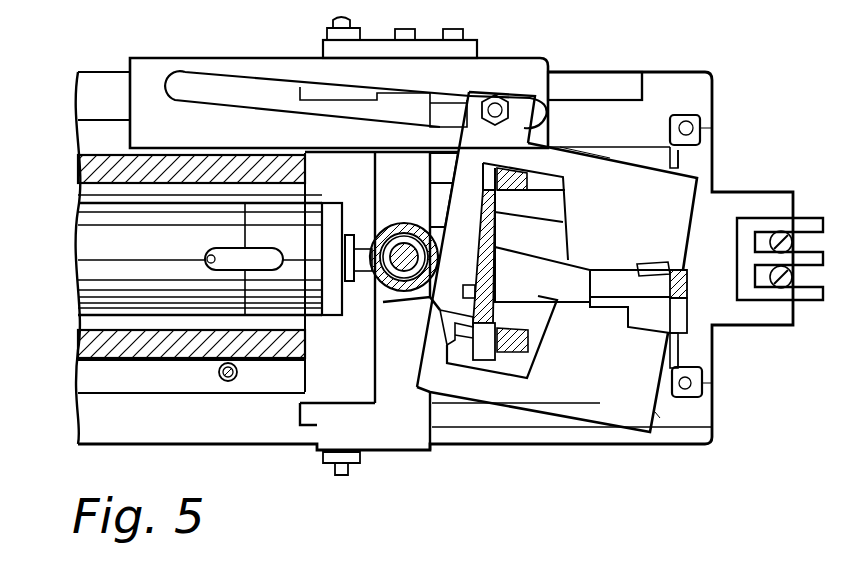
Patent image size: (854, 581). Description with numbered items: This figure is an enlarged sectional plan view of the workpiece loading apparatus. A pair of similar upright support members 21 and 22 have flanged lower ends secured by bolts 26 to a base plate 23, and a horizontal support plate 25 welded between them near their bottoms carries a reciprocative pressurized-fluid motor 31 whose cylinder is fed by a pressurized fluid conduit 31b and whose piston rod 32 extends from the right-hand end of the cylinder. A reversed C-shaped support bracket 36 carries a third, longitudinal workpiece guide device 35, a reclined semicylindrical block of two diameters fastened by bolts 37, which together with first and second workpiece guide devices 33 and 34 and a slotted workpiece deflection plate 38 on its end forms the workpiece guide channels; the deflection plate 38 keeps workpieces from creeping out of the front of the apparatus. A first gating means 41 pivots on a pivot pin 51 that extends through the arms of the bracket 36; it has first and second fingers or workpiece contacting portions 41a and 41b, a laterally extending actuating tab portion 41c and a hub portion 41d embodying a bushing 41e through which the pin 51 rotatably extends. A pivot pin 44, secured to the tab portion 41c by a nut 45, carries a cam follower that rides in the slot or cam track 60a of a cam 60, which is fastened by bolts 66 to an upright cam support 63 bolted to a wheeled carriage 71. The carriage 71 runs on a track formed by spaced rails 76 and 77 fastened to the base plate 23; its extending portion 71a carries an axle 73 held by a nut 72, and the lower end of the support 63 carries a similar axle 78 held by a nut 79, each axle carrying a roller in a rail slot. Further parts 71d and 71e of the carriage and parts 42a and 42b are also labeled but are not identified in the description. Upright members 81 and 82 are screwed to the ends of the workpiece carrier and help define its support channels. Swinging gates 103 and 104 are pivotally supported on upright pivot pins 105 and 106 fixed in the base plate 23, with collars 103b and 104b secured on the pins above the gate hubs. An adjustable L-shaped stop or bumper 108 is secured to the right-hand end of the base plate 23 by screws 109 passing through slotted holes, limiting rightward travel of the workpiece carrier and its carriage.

The upright support member 21 is at (85, 343).
The upright support member 22 is at (85, 170).
The base plate 23 is at (676, 78).
The horizontal support plate 25 is at (85, 195).
The bolt 26 is at (228, 382).
The reciprocative motor 31 is at (85, 262).
The pressurized fluid conduit 31b is at (229, 248).
The piston rod 32 is at (352, 245).
The first workpiece guide device 33 is at (507, 330).
The second workpiece guide device 34 is at (520, 175).
The third longitudinal workpiece guide device 35 is at (560, 290).
The support bracket 36 is at (492, 272).
The bolt 37 is at (477, 292).
The workpiece deflection plate 38 is at (688, 280).
The first gating means 41 is at (420, 319).
The first extending finger 41a is at (610, 170).
The second extending finger 41b is at (645, 410).
The actuating tab portion 41c is at (545, 130).
The hub portion 41d is at (392, 228).
The bushing 41e is at (392, 272).
The upper contact assembly 42a is at (565, 237).
The lower contact assembly 42b is at (520, 370).
The pivot pin 44 is at (489, 128).
The nut 45 is at (500, 122).
The pivot pin 51 is at (428, 246).
The cam 60 is at (492, 68).
The cam track 60a is at (248, 82).
The upright cam support 63 is at (465, 42).
The bolts 66 is at (452, 28).
The wheeled carriage 71 is at (410, 413).
The extending portion 71a is at (440, 195).
The pin 71d is at (460, 340).
The pin 71e is at (465, 325).
The nut 72 is at (355, 456).
The axle 73 is at (341, 476).
The rail 76 is at (495, 418).
The rail 77 is at (598, 80).
The axle 78 is at (342, 19).
The nut 79 is at (326, 34).
The upright member 81 is at (670, 355).
The upright member 82 is at (655, 158).
The swinging gate 103 is at (690, 348).
The collar 103b is at (700, 395).
The swinging gate 104 is at (690, 155).
The collar 104b is at (702, 128).
The pivot pin 105 is at (692, 382).
The pivot pin 106 is at (684, 122).
The stop or bumper 108 is at (762, 224).
The screws 109 is at (785, 272).